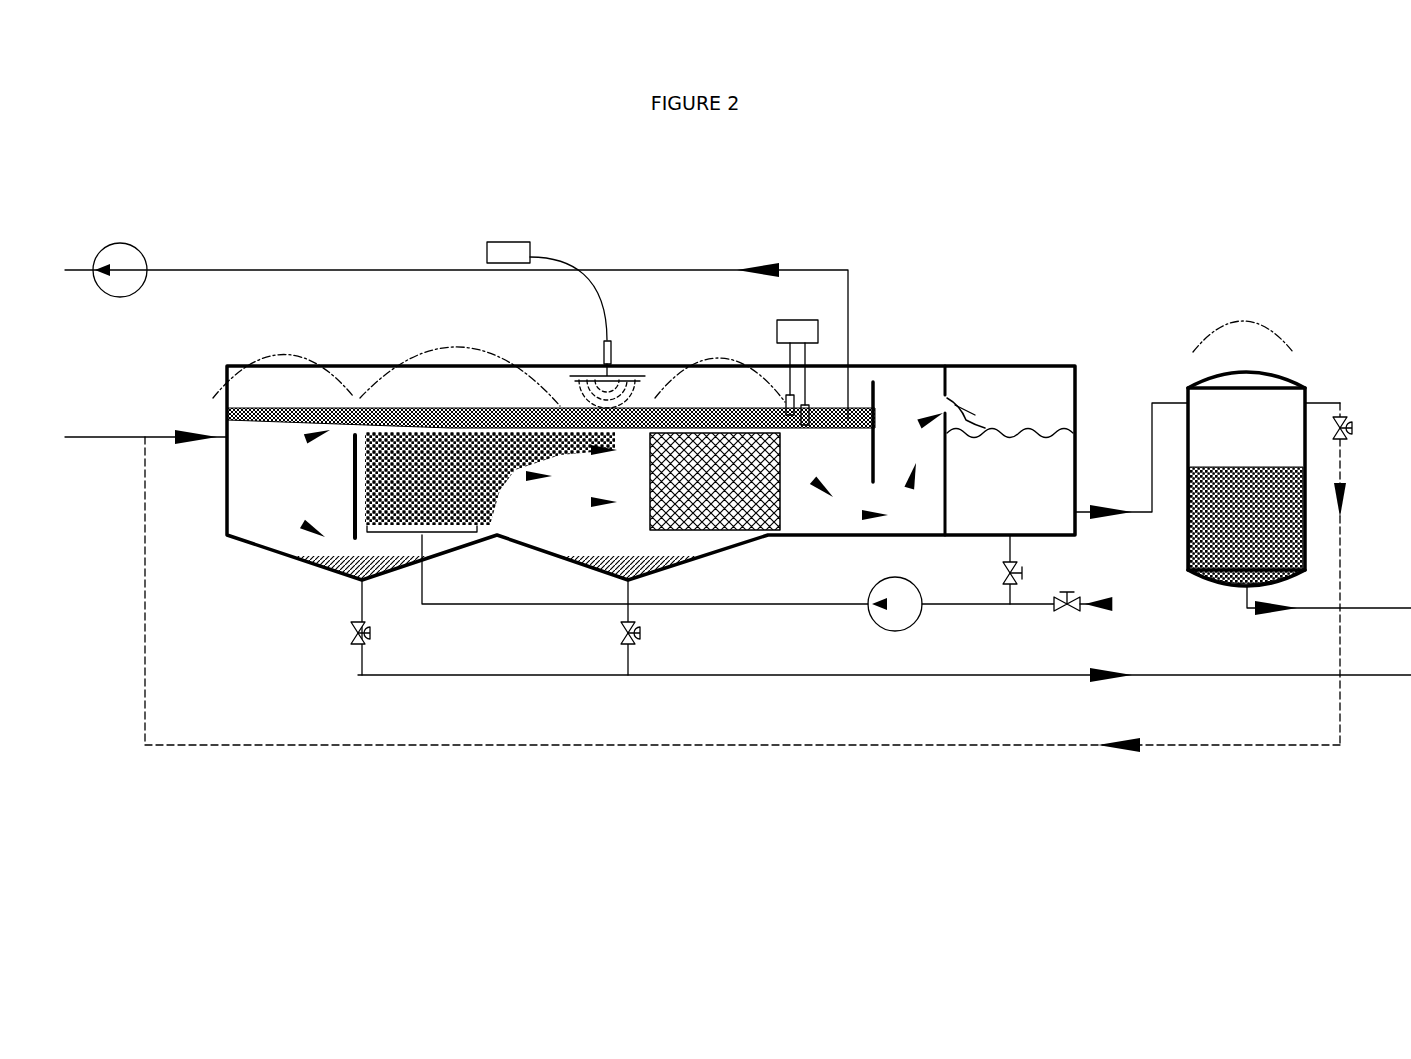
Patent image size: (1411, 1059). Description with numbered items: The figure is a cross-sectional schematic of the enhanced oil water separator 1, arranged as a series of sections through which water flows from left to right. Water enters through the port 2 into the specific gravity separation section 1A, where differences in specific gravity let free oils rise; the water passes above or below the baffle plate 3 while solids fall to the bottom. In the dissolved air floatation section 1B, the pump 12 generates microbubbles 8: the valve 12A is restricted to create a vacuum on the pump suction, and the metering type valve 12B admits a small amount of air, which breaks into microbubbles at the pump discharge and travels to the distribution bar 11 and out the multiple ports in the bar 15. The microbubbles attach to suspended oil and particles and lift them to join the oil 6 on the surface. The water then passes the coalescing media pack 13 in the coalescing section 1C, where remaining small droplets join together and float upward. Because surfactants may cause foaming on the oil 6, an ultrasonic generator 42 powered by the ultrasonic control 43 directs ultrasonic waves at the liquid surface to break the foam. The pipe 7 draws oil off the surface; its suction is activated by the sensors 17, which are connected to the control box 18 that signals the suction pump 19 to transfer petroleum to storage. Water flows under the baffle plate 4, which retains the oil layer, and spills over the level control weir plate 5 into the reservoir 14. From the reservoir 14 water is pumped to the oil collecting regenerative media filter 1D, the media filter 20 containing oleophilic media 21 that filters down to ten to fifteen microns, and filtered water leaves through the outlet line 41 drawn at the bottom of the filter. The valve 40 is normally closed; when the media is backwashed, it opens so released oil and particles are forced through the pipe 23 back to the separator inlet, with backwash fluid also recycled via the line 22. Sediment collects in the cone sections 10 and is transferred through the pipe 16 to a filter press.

The enhanced oil water separator 1 is at (422, 382).
The specific gravity separation section 1A is at (277, 353).
The dissolved air floatation section 1B is at (500, 328).
The coalescing section 1C is at (713, 358).
The oil collecting regenerative media filter 1D is at (1240, 322).
The port 2 is at (163, 432).
The baffle plate 3 is at (355, 442).
The baffle plate 4 is at (835, 410).
The level control weir plate 5 is at (950, 402).
The oil 6 is at (565, 395).
The pipe 7 is at (373, 270).
The microbubbles 8 is at (483, 440).
The cone sections 10 is at (368, 583).
The distribution bar 11 is at (476, 534).
The pump 12 is at (868, 624).
The valve 12A is at (1003, 587).
The metering type valve 12B is at (1057, 616).
The coalescing media pack 13 is at (683, 532).
The reservoir 14 is at (1015, 452).
The bar 15 is at (438, 532).
The pipe 16 is at (710, 683).
The sensors 17 is at (876, 380).
The control box 18 is at (780, 332).
The suction pump 19 is at (100, 250).
The media filter 20 is at (1110, 500).
The media 21 is at (1245, 503).
The line 22 is at (1345, 472).
The pipe 23 is at (235, 748).
The valve 40 is at (1345, 414).
The outlet line 41 is at (1375, 614).
The ultrasonic generator 42 is at (618, 396).
The ultrasonic control 43 is at (503, 250).